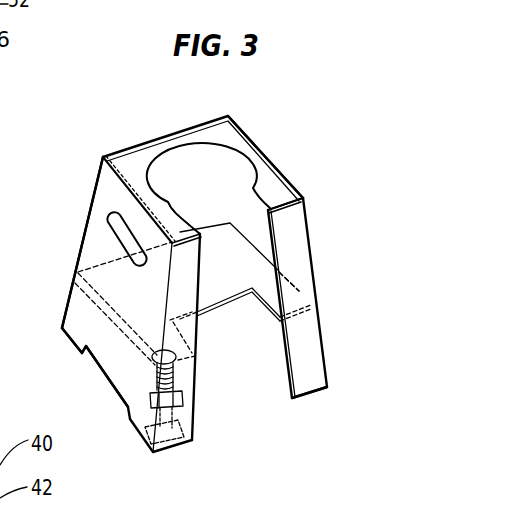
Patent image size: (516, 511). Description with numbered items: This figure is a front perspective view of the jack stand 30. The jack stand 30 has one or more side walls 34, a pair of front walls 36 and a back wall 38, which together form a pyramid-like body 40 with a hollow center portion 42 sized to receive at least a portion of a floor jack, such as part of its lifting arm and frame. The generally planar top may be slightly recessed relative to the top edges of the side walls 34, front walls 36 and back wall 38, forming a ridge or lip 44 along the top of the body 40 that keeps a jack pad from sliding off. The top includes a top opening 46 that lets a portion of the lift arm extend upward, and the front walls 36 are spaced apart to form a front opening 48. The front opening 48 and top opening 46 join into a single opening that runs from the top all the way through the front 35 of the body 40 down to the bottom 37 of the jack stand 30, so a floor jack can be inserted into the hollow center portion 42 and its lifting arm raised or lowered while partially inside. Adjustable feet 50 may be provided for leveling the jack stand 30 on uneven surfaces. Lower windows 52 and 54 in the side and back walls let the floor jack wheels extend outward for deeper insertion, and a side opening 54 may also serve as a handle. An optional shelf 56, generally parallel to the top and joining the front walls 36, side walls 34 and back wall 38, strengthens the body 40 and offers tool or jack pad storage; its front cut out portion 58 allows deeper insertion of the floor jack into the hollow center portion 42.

The jack stand 30 is at (326, 234).
The side walls 34 is at (88, 249).
The front 35 is at (310, 287).
The front walls 36 is at (316, 340).
The bottom 37 is at (318, 386).
The back wall 38 is at (158, 138).
The pyramid-like body 40 is at (53, 207).
The hollow center portion 42 is at (208, 188).
The ridge or lip 44 is at (251, 140).
The top opening 46 is at (188, 158).
The front opening 48 is at (262, 222).
The adjustable feet 50 is at (181, 436).
The lower windows 52 is at (104, 373).
The window 54 is at (116, 223).
The shelf 56 is at (238, 278).
The front cut out portion 58 is at (233, 312).